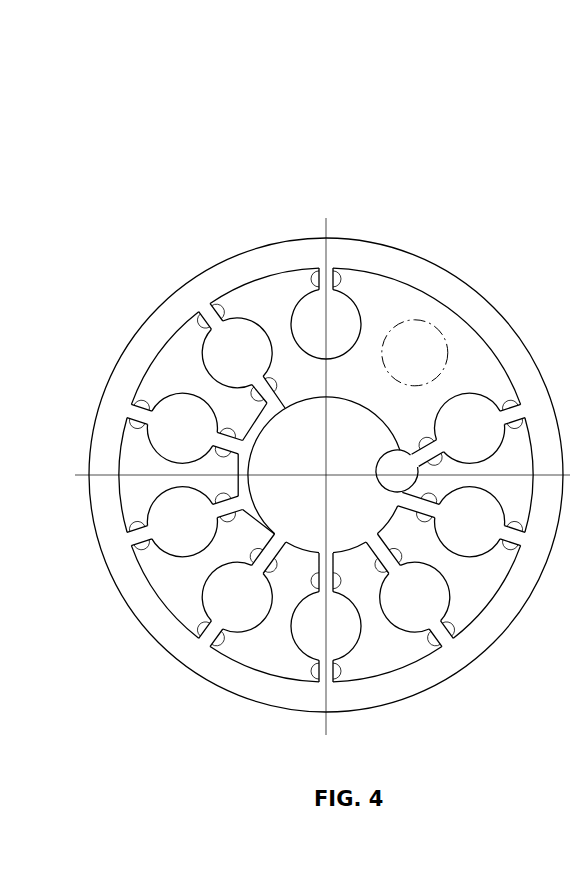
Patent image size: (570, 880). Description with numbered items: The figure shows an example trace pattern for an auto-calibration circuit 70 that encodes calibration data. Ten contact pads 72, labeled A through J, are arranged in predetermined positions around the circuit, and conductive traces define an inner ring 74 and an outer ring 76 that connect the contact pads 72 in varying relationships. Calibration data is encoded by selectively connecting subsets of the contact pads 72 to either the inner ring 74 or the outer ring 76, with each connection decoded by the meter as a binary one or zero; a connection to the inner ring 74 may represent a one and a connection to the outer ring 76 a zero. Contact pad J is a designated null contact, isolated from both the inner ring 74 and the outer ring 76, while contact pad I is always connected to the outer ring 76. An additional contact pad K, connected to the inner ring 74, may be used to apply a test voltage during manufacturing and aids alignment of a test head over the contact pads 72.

The auto-calibration circuit 70 is at (327, 150).
The contact pads 72 is at (215, 353).
The inner ring 74 is at (243, 488).
The outer ring 76 is at (453, 289).